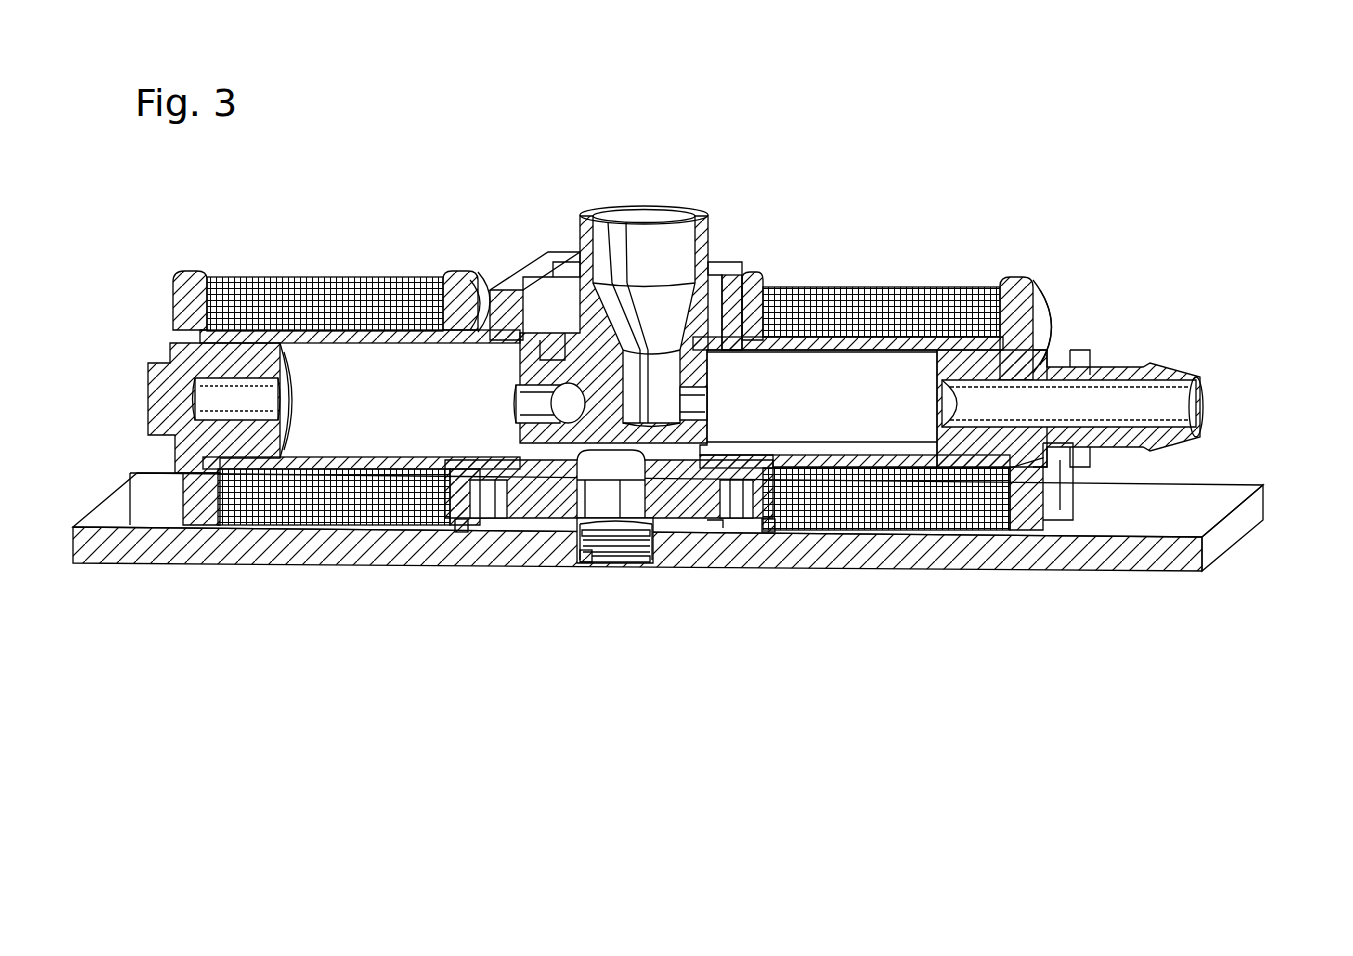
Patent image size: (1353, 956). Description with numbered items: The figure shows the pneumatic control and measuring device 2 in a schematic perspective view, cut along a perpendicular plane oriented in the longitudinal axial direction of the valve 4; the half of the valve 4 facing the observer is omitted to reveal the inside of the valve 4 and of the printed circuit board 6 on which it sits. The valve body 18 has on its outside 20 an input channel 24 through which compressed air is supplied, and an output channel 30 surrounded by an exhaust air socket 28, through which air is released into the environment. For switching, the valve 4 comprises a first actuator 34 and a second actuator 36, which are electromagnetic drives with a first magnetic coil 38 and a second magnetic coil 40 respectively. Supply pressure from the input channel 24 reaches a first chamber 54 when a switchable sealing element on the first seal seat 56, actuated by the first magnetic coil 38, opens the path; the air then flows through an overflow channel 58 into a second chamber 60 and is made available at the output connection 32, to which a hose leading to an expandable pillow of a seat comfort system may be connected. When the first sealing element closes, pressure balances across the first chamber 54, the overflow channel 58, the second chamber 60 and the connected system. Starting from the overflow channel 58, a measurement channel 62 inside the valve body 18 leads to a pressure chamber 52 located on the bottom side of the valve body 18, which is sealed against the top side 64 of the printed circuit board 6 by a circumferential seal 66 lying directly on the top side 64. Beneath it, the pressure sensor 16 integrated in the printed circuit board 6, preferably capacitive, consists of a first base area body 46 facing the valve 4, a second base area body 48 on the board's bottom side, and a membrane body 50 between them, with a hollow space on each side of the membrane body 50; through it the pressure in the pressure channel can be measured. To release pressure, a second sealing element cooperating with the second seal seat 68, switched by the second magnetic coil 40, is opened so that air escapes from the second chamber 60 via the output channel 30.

The pneumatic control and measuring device 2 is at (1016, 136).
The valve 4 is at (543, 250).
The printed circuit board 6 is at (110, 482).
The pressure sensor 16 is at (590, 556).
The valve body 18 is at (1040, 297).
The outside 20 is at (1058, 322).
The input channel 24 is at (570, 408).
The exhaust air socket 28 is at (701, 208).
The output channel 30 is at (637, 238).
The output connection 32 is at (1162, 374).
The first actuator 34 is at (308, 216).
The second actuator 36 is at (909, 234).
The first magnetic coil 38 is at (274, 282).
The second magnetic coil 40 is at (941, 292).
The first base area body 46 is at (636, 565).
The second base area body 48 is at (623, 568).
The membrane body 50 is at (607, 560).
The pressure chamber 52 is at (532, 518).
The first chamber 54 is at (382, 377).
The first seal seat 56 is at (512, 428).
The overflow channel 58 is at (674, 452).
The second chamber 60 is at (838, 374).
The measurement channel 62 is at (636, 500).
The top side 64 is at (1198, 518).
The circumferential seal 66 is at (462, 530).
The second seal seat 68 is at (716, 378).